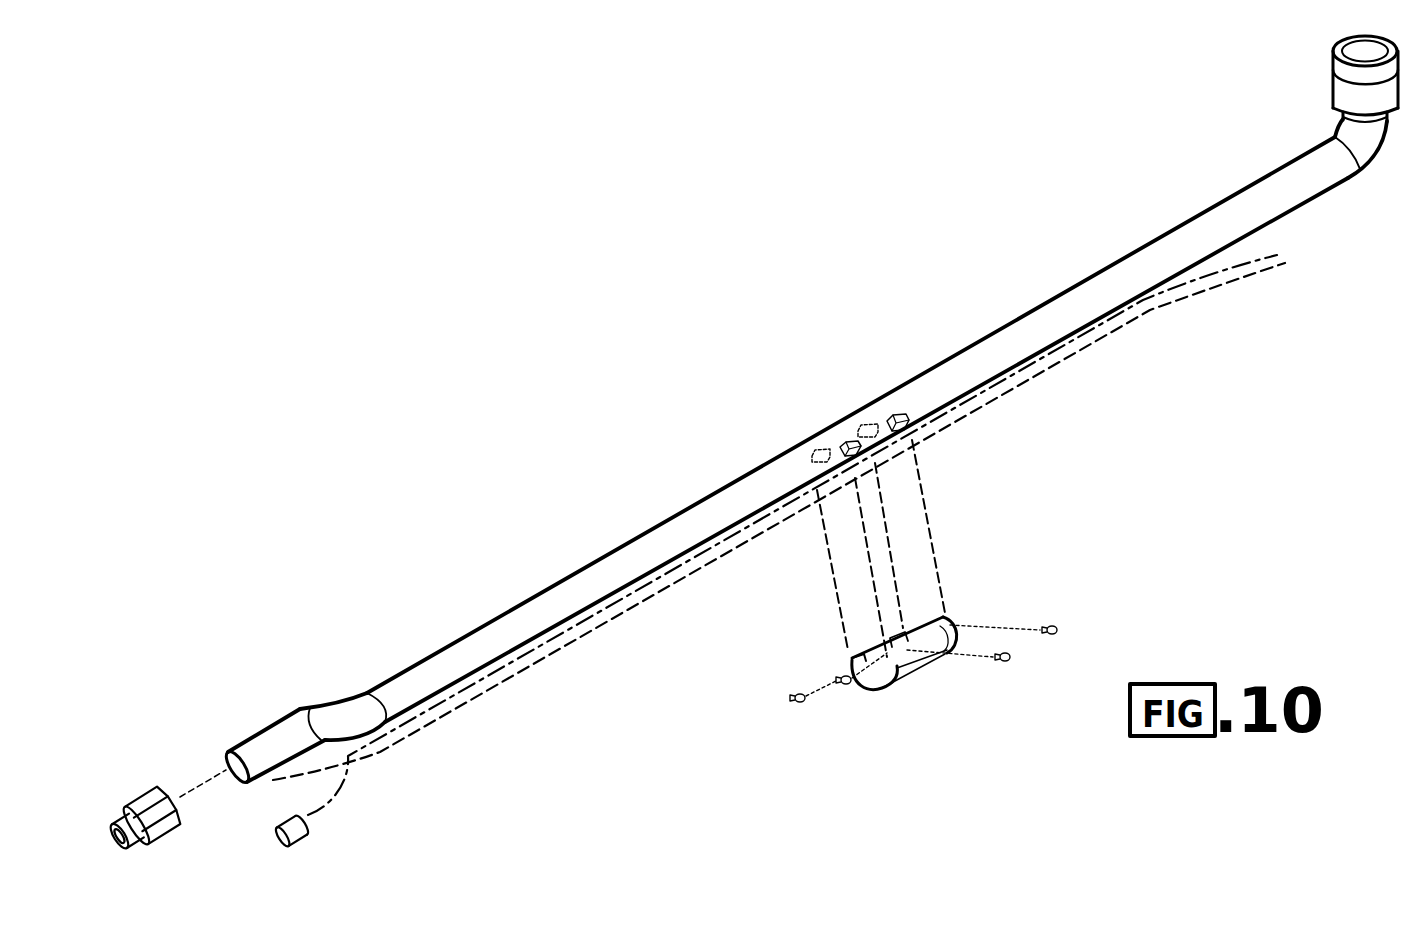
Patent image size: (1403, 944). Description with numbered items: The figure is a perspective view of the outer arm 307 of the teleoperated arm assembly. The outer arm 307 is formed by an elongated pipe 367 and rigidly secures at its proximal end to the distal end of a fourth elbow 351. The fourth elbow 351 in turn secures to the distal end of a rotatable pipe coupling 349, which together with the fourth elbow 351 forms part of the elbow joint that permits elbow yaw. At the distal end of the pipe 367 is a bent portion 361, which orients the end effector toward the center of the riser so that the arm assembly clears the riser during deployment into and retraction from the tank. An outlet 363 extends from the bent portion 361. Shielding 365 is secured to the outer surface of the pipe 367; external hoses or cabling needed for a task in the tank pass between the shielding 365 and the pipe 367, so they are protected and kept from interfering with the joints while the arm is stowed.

The outer arm 307 is at (1018, 346).
The coupling 349 is at (1360, 93).
The fourth elbow 351 is at (1372, 131).
The bent portion 361 is at (363, 707).
The outlet 363 is at (262, 740).
The shielding 365 is at (905, 672).
The pipe 367 is at (617, 571).